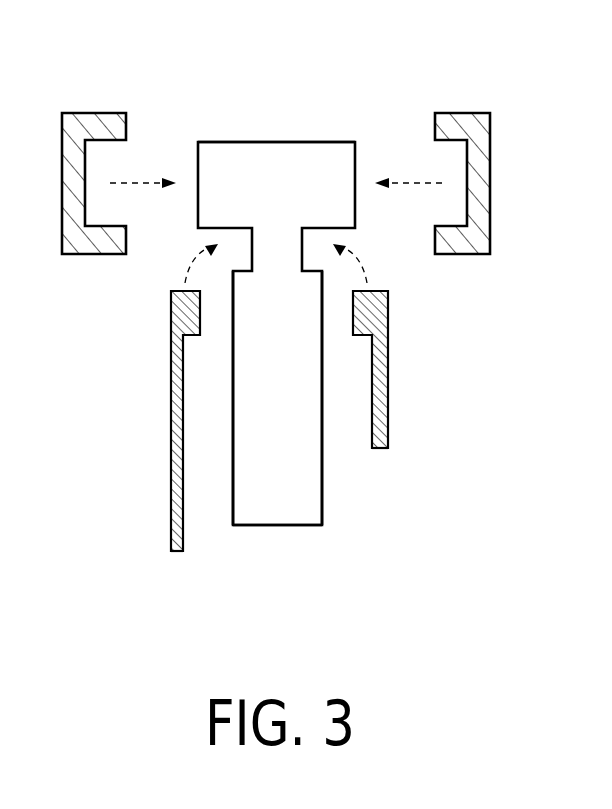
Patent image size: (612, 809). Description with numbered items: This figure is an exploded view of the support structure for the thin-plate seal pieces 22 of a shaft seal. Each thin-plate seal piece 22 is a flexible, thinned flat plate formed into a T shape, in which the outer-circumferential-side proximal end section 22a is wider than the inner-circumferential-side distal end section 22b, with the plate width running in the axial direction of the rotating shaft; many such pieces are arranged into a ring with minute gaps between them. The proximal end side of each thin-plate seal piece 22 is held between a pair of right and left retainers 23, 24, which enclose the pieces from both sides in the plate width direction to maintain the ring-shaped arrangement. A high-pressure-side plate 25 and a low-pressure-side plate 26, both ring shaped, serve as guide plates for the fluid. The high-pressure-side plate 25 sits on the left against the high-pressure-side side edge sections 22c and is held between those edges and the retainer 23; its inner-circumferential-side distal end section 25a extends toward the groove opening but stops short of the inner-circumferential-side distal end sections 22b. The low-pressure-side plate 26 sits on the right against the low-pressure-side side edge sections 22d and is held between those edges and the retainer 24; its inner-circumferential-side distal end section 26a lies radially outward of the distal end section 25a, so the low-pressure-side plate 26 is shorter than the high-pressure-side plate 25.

The thin-plate seal piece 22 is at (257, 132).
The outer-circumferential-side proximal end section 22a is at (313, 140).
The inner-circumferential-side distal end section 22b is at (272, 527).
The high-pressure-side side edge section 22c is at (233, 497).
The low-pressure-side side edge section 22d is at (322, 500).
The retainer 23 is at (86, 112).
The retainer 24 is at (465, 112).
The high-pressure-side plate 25 is at (160, 398).
The inner-circumferential-side distal end section 25a is at (176, 553).
The low-pressure-side plate 26 is at (402, 354).
The inner-circumferential-side distal end section 26a is at (379, 450).